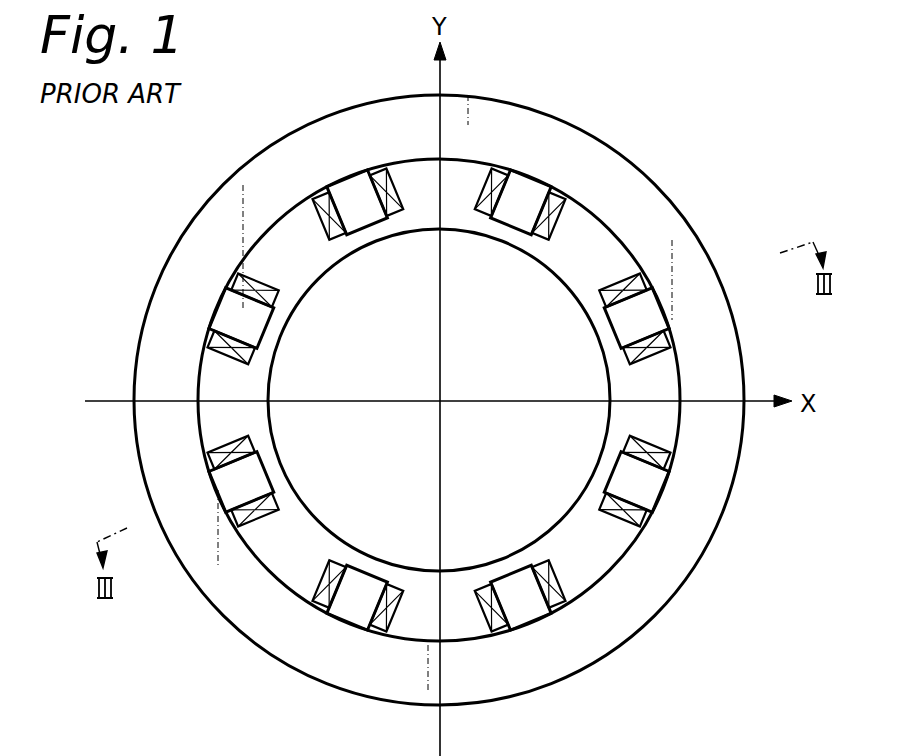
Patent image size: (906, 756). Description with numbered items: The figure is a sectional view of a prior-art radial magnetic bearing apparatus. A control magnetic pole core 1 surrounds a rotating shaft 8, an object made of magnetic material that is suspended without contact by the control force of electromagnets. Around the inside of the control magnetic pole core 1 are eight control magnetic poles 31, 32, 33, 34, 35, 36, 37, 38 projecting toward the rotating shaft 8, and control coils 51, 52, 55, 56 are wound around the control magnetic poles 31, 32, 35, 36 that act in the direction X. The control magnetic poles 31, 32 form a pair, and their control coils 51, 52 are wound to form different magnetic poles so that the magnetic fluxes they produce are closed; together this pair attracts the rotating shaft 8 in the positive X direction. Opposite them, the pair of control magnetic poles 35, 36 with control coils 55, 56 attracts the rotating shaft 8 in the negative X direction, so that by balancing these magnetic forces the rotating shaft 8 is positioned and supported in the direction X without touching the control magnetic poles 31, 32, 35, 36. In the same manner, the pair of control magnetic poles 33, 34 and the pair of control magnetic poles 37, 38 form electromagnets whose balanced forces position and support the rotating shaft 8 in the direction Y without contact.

The control magnetic pole core 1 is at (253, 213).
The rotating shaft 8 is at (540, 305).
The control magnetic pole 31 is at (703, 275).
The control magnetic pole 32 is at (702, 491).
The control magnetic pole 33 is at (535, 612).
The control magnetic pole 34 is at (350, 613).
The control magnetic pole 35 is at (169, 534).
The control magnetic pole 36 is at (179, 305).
The control magnetic pole 37 is at (358, 200).
The control magnetic pole 38 is at (522, 200).
The control coil 51 is at (626, 268).
The control coil 52 is at (660, 441).
The control coil 55 is at (262, 522).
The control coil 56 is at (237, 357).